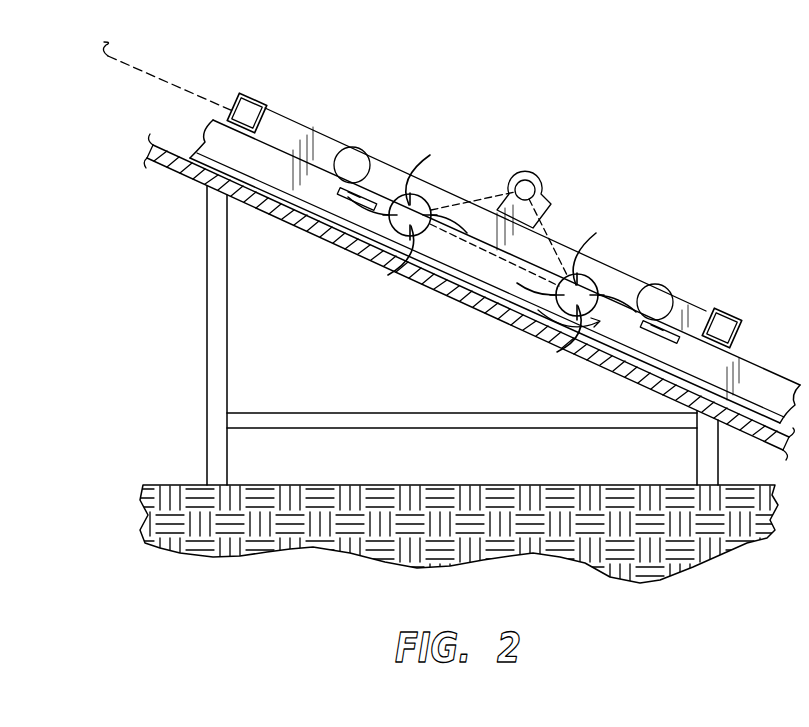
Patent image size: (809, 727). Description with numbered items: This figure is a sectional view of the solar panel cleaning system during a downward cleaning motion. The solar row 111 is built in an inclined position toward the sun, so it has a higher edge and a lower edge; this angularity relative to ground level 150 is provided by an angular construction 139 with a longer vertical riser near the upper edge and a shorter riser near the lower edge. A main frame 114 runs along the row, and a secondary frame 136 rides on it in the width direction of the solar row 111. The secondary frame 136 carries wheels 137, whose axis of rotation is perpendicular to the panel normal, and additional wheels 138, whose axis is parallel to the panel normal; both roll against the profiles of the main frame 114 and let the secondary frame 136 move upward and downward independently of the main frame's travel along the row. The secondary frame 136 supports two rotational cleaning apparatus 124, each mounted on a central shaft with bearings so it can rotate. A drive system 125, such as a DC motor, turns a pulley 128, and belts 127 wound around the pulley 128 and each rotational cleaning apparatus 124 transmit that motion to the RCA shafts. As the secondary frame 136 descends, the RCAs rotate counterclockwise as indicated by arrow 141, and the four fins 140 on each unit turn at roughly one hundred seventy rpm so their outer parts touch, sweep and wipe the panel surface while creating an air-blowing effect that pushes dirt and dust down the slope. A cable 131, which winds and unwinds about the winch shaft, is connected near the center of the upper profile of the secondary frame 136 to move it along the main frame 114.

The solar row 111 is at (190, 176).
The main frame 114 is at (469, 297).
The rotational cleaning apparatus 124 is at (396, 263).
The drive system 125 is at (545, 196).
The belts 127 is at (462, 190).
The pulley 128 is at (536, 183).
The cable 131 is at (153, 75).
The secondary frame 136 is at (267, 100).
The wheels 137 is at (372, 160).
The additional wheels 138 is at (648, 343).
The angular construction 139 is at (207, 317).
The fins 140 is at (499, 311).
The arrow 141 is at (534, 332).
The ground level 150 is at (194, 485).